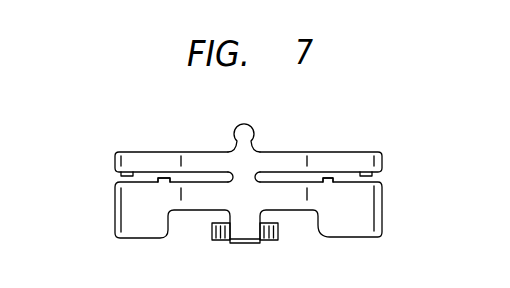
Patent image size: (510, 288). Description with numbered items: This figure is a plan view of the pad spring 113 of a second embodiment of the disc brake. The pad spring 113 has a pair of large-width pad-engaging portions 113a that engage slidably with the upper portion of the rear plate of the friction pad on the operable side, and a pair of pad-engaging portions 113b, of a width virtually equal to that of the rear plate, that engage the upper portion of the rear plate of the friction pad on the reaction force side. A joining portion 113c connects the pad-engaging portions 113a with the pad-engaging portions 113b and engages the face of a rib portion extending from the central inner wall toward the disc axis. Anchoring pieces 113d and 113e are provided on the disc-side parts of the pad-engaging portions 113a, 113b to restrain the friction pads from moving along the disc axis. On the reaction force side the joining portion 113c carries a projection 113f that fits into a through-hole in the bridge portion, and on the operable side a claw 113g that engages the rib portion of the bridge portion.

The pad spring 113 is at (215, 106).
The pad-engaging portions 113a is at (148, 230).
The pad-engaging portions 113b is at (147, 160).
The joining portion 113c is at (247, 172).
The anchoring pieces 113d is at (163, 179).
The anchoring pieces 113e is at (125, 177).
The projection 113f is at (245, 129).
The claw 113g is at (213, 229).